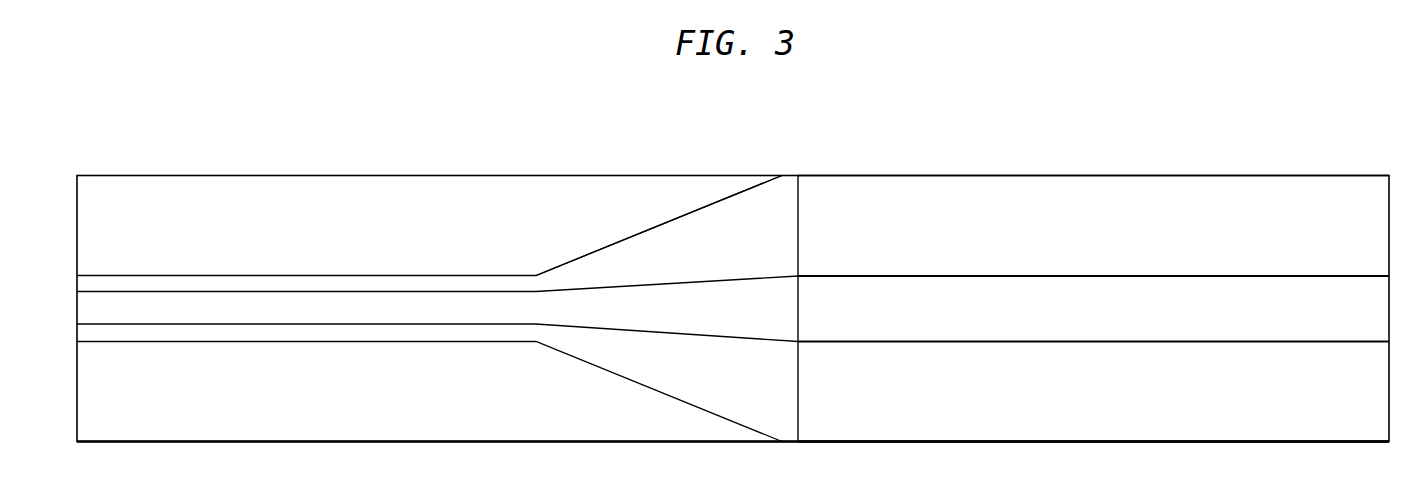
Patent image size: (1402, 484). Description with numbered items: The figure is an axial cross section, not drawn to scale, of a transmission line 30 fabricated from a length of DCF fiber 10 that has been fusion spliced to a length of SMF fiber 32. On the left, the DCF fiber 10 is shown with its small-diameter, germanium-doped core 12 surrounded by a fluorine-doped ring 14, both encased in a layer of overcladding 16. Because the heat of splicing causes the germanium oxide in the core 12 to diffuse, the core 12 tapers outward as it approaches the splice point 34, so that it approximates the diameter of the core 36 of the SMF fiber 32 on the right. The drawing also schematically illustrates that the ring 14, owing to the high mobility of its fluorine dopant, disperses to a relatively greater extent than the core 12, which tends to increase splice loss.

The DCF fiber 10 is at (333, 175).
The core 12 is at (717, 295).
The ring 14 is at (639, 245).
The overcladding 16 is at (497, 188).
The transmission line 30 is at (1112, 86).
The SMF fiber 32 is at (1264, 176).
The splice point 34 is at (800, 188).
The core of the SMF fiber 36 is at (957, 286).